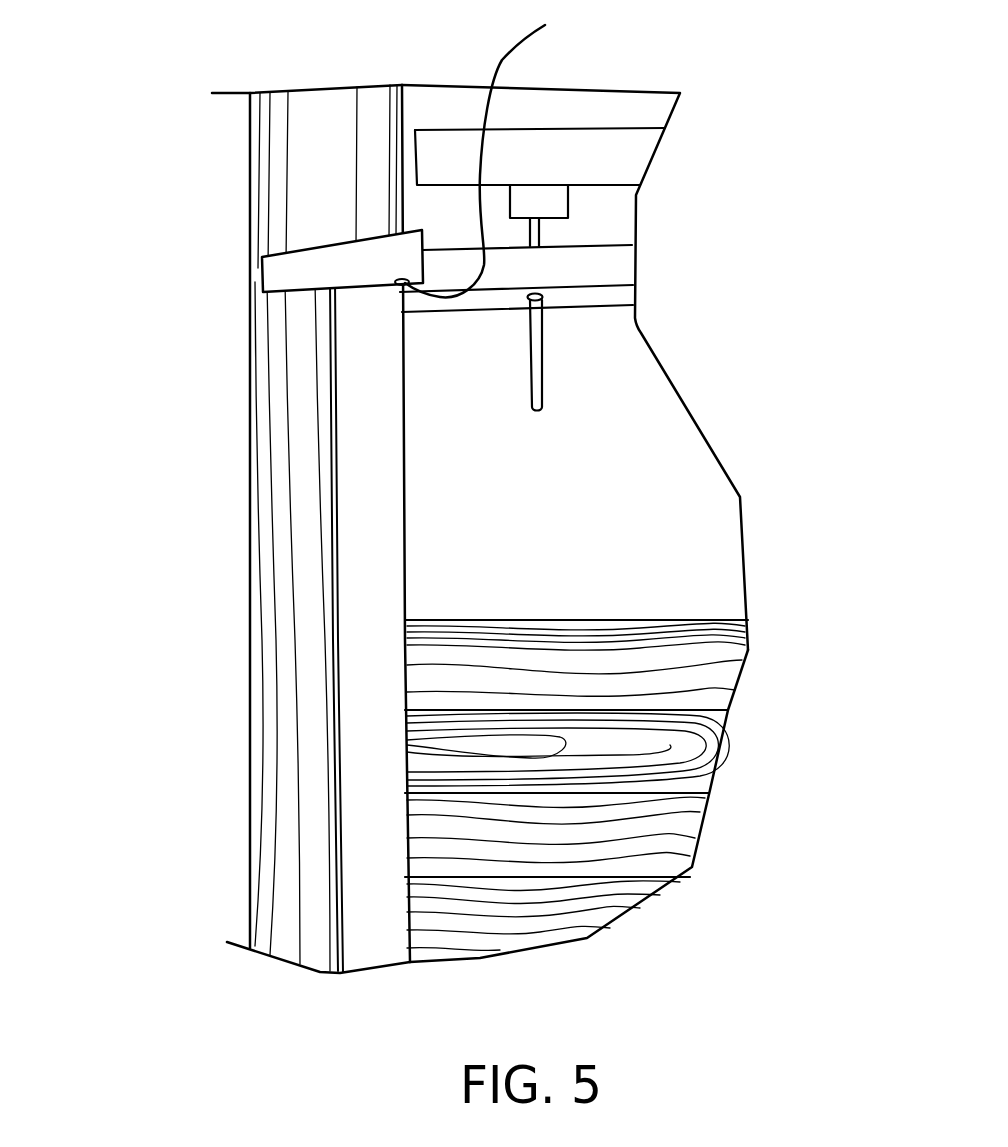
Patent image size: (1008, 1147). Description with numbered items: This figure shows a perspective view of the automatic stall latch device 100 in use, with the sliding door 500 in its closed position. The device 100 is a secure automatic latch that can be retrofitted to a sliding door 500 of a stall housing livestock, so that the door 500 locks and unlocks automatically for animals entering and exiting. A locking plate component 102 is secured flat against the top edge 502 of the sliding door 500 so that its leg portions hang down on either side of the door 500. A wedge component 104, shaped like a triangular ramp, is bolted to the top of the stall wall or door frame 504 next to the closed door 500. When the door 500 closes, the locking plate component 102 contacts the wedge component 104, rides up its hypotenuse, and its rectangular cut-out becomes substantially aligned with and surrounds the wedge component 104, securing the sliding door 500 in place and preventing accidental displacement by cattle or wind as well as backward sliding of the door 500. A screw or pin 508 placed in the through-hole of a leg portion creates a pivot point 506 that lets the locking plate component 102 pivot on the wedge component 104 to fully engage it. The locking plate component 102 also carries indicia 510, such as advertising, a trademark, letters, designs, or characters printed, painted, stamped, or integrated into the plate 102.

The automatic stall latch device 100 is at (667, 70).
The locking plate component 102 is at (610, 265).
The wedge component 104 is at (268, 283).
The sliding door 500 is at (700, 662).
The top edge 502 is at (592, 242).
The door frame 504 is at (270, 815).
The pivot point 506 is at (402, 157).
The screw or pin 508 is at (486, 148).
The indicia 510 is at (322, 253).